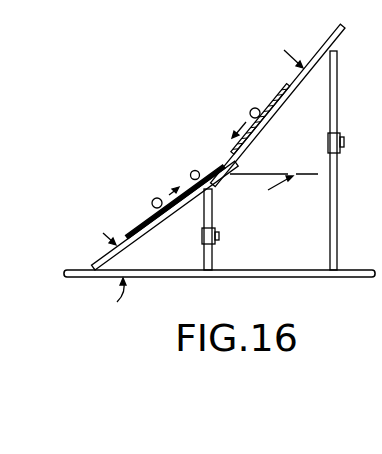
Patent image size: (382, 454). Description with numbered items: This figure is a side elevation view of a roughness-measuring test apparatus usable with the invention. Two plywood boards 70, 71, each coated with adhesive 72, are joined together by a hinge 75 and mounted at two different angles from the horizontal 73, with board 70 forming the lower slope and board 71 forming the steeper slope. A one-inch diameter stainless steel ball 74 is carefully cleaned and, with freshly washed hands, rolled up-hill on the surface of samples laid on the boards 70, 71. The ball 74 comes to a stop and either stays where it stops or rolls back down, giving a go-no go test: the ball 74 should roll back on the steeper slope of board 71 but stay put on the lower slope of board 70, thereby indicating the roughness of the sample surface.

The plywood board 70 is at (135, 240).
The plywood board 71 is at (330, 36).
The adhesive 72 is at (224, 165).
The horizontal 73 is at (256, 270).
The stainless steel ball 74 is at (190, 173).
The hinge 75 is at (224, 178).